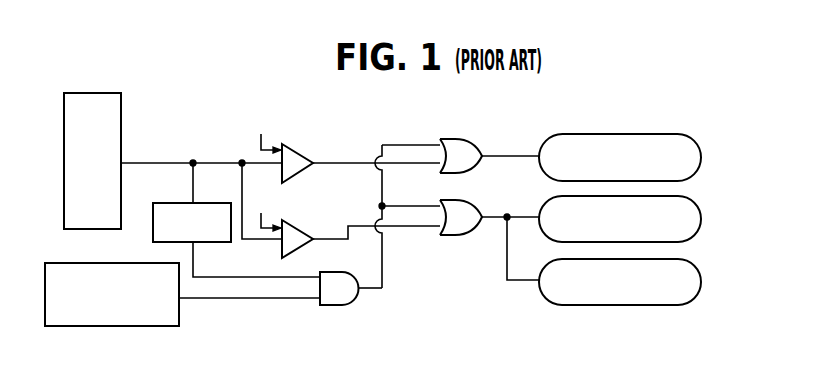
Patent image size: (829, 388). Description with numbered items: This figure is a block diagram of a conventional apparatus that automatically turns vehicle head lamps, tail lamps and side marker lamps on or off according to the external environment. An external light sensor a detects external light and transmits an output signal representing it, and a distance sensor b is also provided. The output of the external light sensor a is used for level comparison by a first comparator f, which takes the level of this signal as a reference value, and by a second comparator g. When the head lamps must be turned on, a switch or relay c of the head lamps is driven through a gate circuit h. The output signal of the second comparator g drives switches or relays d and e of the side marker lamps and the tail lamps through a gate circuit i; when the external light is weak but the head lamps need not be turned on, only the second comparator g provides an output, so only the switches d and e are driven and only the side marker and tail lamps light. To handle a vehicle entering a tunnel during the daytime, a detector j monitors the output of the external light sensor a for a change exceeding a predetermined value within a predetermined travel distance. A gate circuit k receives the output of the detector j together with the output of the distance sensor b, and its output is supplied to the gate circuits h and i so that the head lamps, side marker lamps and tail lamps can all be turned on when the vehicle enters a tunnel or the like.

The external light sensor a is at (121, 113).
The distance sensor b is at (88, 263).
The switch or relay of the head lamps c is at (544, 137).
The switch or relay of the side marker lamps d is at (542, 200).
The switch or relay of the tail lamps e is at (541, 263).
The first comparator f is at (300, 154).
The second comparator g is at (297, 247).
The gate circuit h is at (472, 138).
The gate circuit i is at (466, 200).
The detector j is at (203, 203).
The gate circuit k is at (333, 306).